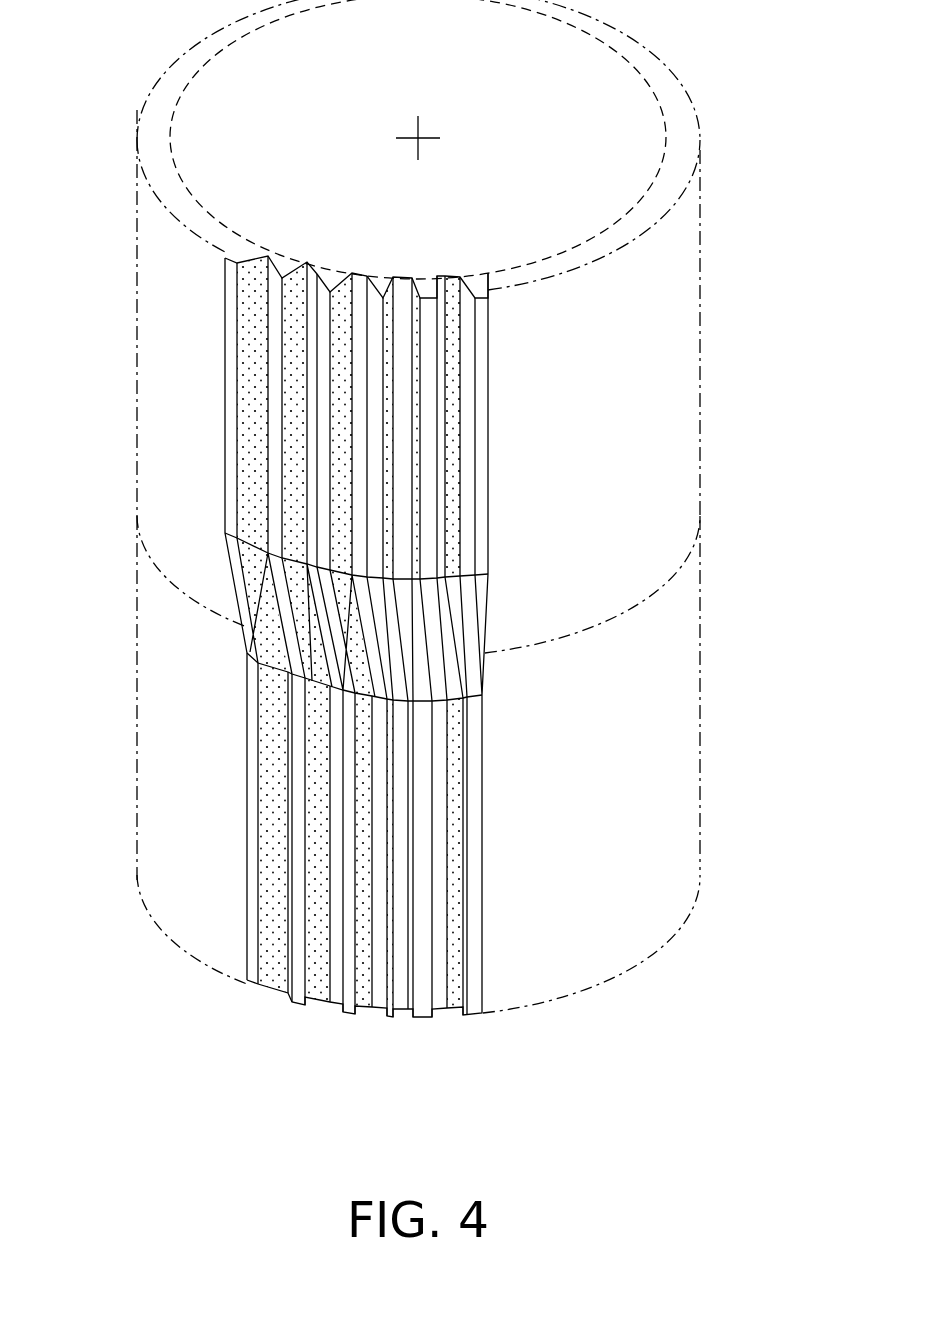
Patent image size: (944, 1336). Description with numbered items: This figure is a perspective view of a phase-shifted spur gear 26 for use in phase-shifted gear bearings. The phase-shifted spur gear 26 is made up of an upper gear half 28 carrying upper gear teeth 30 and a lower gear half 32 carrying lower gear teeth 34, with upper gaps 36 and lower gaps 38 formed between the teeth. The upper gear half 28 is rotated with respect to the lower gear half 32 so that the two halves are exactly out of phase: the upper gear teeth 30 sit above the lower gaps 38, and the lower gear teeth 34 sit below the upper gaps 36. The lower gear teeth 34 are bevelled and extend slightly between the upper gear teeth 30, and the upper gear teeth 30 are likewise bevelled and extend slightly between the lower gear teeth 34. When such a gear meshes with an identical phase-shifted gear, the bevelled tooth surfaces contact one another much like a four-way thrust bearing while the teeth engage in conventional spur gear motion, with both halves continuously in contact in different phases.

The phase-shifted spur gear 26 is at (90, 521).
The upper gear half 28 is at (677, 295).
The upper gear teeth 30 is at (327, 389).
The lower gear half 32 is at (677, 781).
The lower gear teeth 34 is at (396, 882).
The upper gaps 36 is at (272, 248).
The lower gaps 38 is at (328, 1002).